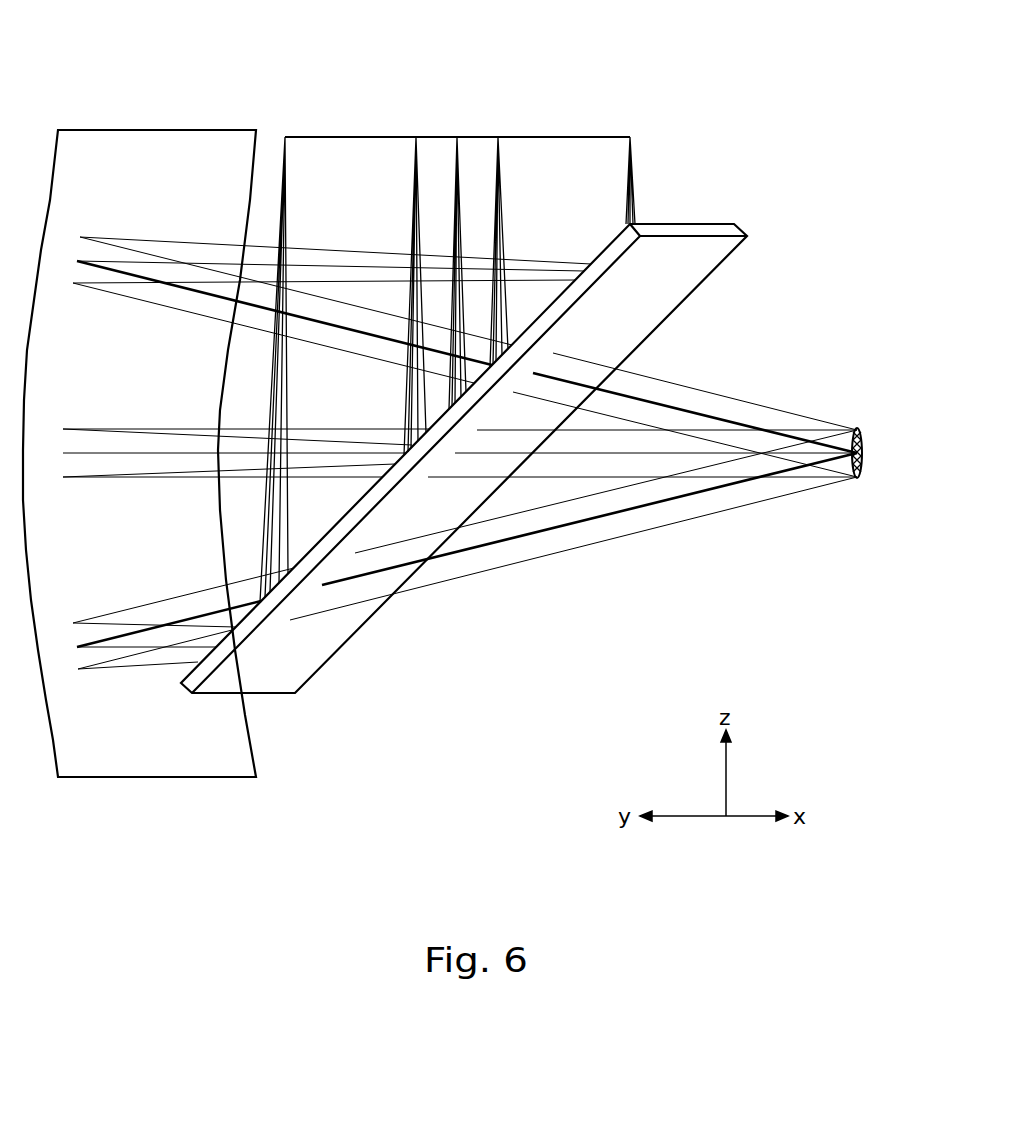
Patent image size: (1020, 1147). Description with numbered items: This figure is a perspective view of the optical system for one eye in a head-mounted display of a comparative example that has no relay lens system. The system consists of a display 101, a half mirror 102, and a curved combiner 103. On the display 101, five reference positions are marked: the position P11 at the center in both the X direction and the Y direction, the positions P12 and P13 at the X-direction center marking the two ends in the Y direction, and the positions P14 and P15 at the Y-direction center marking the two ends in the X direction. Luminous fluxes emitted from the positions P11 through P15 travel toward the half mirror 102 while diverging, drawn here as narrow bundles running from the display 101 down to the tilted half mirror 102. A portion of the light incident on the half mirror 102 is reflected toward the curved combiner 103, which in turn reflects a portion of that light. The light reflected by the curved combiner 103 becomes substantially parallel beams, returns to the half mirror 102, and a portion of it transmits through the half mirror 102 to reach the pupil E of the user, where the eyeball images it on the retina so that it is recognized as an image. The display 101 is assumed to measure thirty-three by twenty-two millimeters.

The display 101 is at (553, 136).
The half mirror 102 is at (699, 229).
The curved combiner 103 is at (164, 129).
The position indicating the center of the display P11 is at (457, 136).
The position indicating one end in the Y direction P12 is at (630, 136).
The position indicating the other end in the Y direction P13 is at (285, 136).
The position indicating one end in the X direction P14 is at (416, 136).
The position indicating the other end in the X direction P15 is at (498, 136).
The pupil E is at (862, 445).